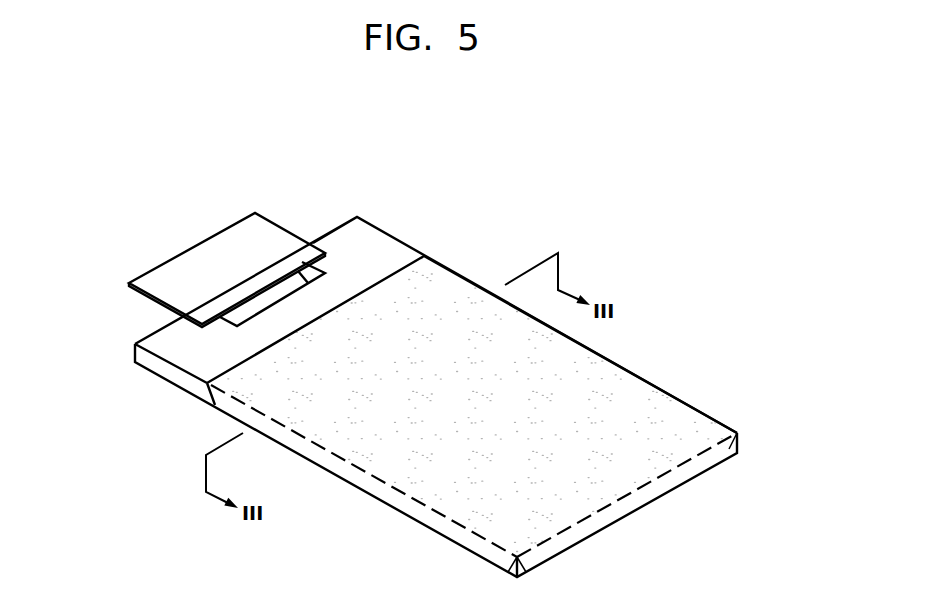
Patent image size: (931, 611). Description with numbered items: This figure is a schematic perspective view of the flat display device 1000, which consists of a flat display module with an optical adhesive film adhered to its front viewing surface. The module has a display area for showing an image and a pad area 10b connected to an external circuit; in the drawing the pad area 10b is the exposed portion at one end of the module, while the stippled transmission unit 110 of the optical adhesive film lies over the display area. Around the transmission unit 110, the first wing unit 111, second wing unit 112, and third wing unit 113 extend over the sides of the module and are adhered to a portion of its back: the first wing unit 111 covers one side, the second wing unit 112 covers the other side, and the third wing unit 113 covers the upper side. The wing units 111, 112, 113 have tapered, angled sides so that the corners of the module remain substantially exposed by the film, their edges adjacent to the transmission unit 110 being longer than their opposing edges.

The flat display device 1000 is at (564, 234).
The pad area 10b is at (163, 347).
The transmission unit 110 is at (683, 430).
The first wing unit 111 is at (453, 536).
The second wing unit 112 is at (677, 396).
The third wing unit 113 is at (630, 507).